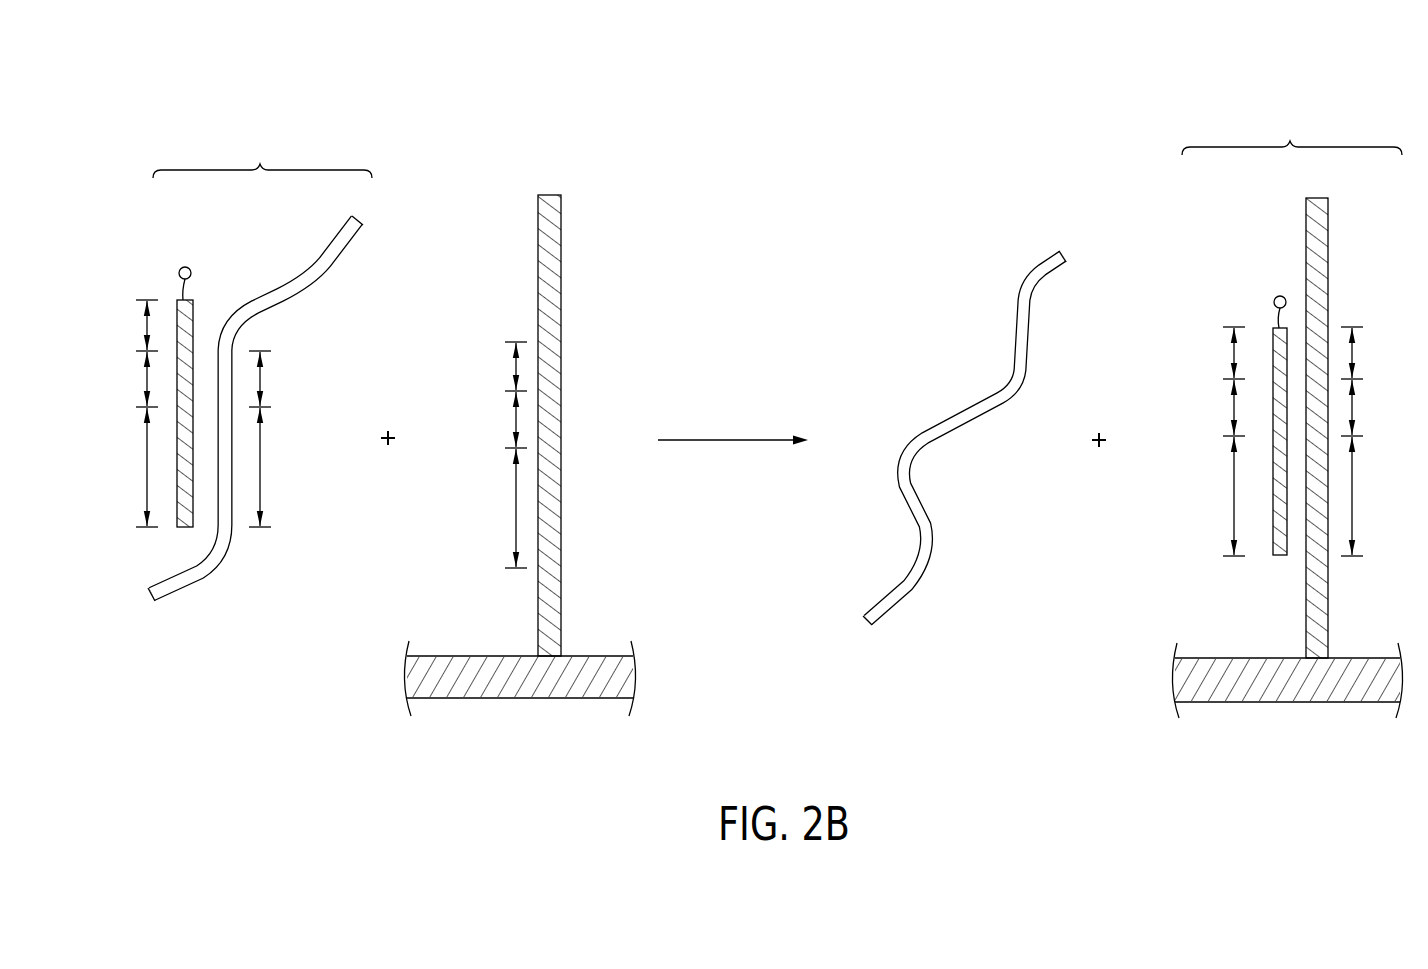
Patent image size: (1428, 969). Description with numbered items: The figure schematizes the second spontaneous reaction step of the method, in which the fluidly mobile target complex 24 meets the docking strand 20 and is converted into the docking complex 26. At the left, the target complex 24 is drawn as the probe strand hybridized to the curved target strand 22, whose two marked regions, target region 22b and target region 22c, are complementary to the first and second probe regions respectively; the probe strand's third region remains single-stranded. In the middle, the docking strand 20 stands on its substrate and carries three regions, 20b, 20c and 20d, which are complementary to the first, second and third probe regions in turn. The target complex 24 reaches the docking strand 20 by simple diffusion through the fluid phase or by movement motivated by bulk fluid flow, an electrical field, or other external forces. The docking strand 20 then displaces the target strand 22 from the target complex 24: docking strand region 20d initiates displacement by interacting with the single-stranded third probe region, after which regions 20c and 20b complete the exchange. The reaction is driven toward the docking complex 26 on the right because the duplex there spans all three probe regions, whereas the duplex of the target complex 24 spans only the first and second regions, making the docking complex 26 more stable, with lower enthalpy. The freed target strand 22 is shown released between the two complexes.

The fluidly mobile target complex 24 is at (260, 163).
The docking complex 26 is at (1290, 141).
The target strand 22 is at (1018, 302).
The target region 22c is at (260, 378).
The target region 22b is at (260, 465).
The docking strand 20 is at (561, 268).
The docking strand region 20d is at (516, 368).
The docking strand region 20c is at (516, 420).
The docking strand region 20b is at (516, 508).